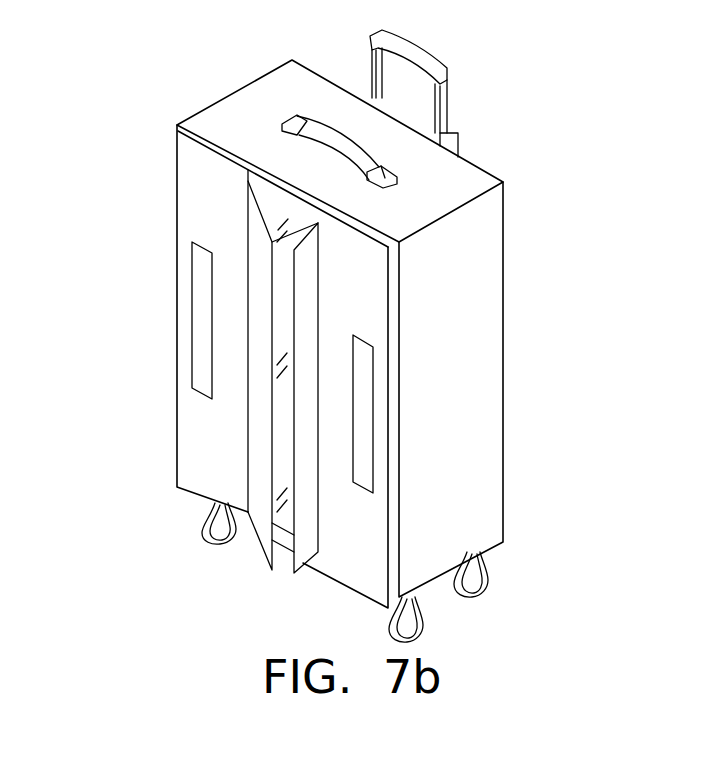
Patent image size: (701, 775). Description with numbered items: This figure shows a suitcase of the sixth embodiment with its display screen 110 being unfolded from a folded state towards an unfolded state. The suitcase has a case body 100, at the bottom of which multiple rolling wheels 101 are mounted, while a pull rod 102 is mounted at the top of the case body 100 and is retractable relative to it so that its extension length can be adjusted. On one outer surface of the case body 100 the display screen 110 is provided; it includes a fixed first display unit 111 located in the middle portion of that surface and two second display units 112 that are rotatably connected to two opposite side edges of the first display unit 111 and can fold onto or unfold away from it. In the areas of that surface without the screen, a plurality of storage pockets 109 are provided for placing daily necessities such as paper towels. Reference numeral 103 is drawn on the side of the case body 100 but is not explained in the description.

The case body 100 is at (512, 309).
The rolling wheels 101 is at (490, 577).
The pull rod 102 is at (447, 103).
The side panel 103 is at (192, 168).
The storage pockets 109 is at (203, 298).
The display screen 110 is at (178, 377).
The first display unit 111 is at (280, 435).
The second display unit 112 is at (257, 407).